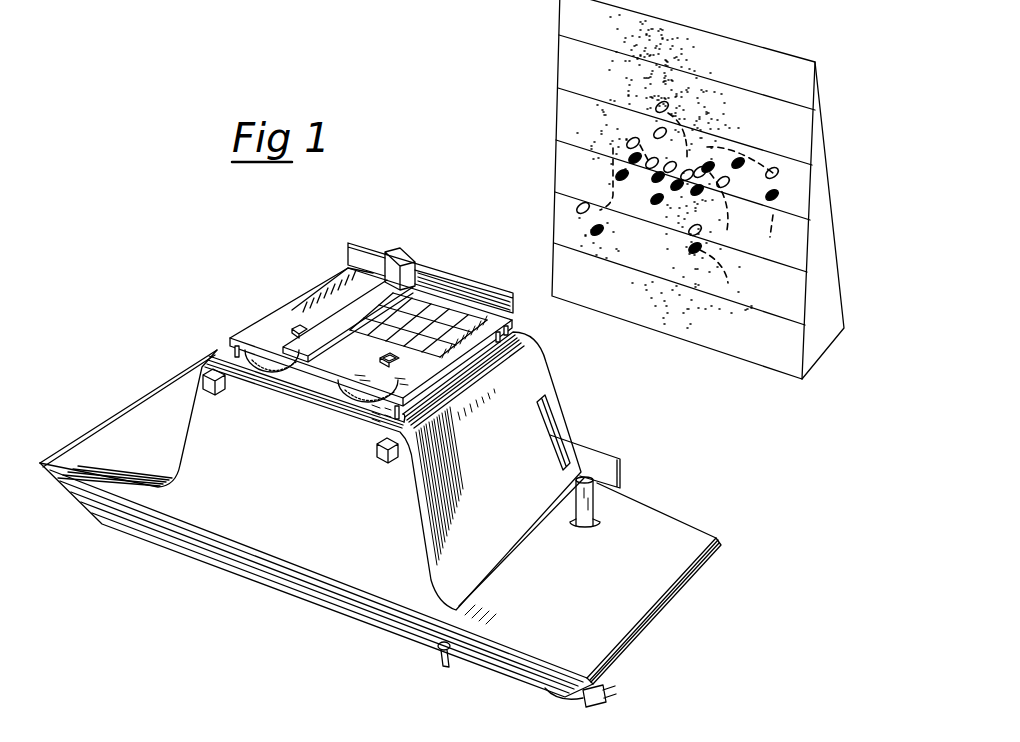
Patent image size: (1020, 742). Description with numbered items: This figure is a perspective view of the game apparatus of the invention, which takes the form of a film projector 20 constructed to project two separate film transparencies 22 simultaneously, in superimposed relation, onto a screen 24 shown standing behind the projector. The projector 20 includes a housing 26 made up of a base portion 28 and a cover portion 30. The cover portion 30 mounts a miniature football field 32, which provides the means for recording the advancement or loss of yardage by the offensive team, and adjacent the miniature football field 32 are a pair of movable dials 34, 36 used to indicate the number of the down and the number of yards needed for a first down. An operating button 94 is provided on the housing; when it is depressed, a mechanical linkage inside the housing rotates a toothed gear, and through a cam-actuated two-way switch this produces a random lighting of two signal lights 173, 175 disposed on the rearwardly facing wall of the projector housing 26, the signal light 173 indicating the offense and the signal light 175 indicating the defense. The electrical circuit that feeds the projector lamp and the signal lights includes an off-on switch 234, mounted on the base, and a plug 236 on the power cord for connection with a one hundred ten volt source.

The film projector 20 is at (692, 509).
The film transparencies 22 is at (605, 452).
The screen 24 is at (556, 72).
The housing 26 is at (300, 500).
The base portion 28 is at (283, 583).
The cover portion 30 is at (226, 524).
The miniature football field 32 is at (343, 294).
The movable dial 34 is at (285, 373).
The movable dial 36 is at (347, 398).
The operating button 94 is at (581, 532).
The signal light 173 is at (210, 395).
The signal light 175 is at (383, 463).
The off-on switch 234 is at (444, 659).
The plug 236 is at (604, 705).